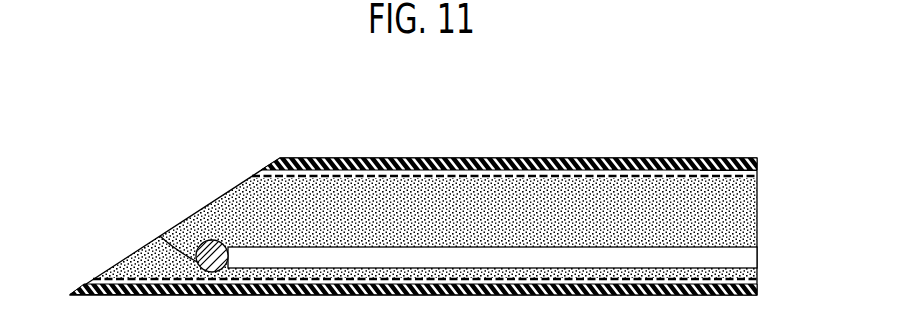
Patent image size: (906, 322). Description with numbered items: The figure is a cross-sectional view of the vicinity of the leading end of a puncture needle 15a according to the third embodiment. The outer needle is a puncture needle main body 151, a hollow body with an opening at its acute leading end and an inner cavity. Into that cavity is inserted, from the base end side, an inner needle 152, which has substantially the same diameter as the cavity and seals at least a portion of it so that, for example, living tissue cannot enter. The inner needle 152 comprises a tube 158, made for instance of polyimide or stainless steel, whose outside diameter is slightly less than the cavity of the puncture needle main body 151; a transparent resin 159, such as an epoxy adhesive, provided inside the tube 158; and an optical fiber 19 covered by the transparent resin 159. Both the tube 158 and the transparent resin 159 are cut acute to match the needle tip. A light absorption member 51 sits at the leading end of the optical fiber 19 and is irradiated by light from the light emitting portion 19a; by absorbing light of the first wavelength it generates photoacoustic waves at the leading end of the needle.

The puncture needle 15a is at (605, 103).
The puncture needle main body 151 is at (327, 158).
The inner needle 152 is at (488, 171).
The tube 158 is at (713, 172).
The transparent resin 159 is at (392, 178).
The optical fiber 19 is at (605, 246).
The light emitting portion 19a is at (200, 246).
The light absorption member 51 is at (160, 236).